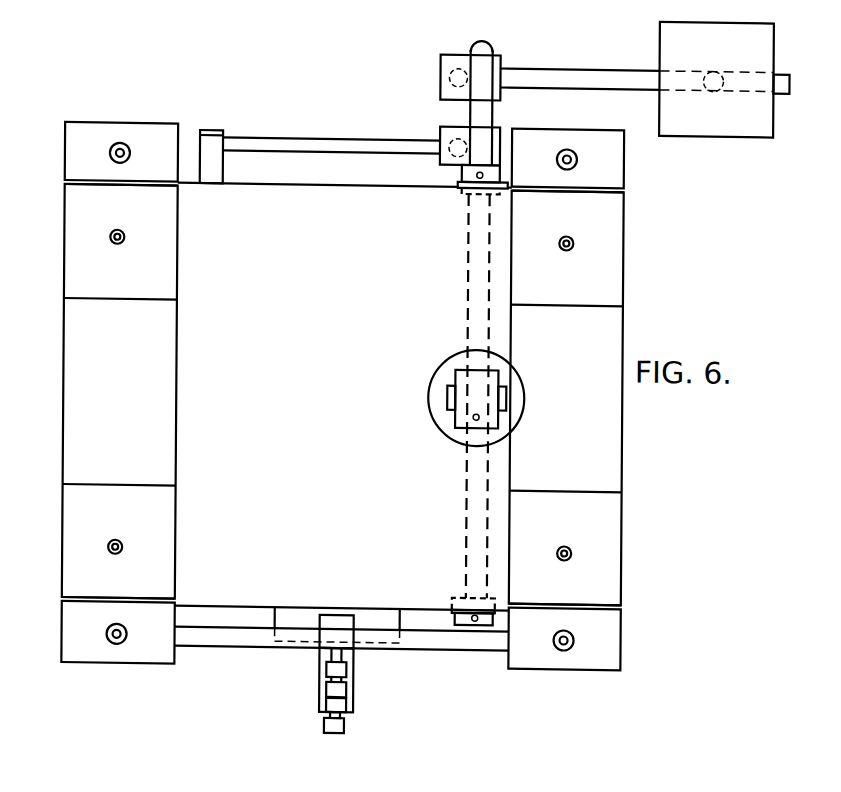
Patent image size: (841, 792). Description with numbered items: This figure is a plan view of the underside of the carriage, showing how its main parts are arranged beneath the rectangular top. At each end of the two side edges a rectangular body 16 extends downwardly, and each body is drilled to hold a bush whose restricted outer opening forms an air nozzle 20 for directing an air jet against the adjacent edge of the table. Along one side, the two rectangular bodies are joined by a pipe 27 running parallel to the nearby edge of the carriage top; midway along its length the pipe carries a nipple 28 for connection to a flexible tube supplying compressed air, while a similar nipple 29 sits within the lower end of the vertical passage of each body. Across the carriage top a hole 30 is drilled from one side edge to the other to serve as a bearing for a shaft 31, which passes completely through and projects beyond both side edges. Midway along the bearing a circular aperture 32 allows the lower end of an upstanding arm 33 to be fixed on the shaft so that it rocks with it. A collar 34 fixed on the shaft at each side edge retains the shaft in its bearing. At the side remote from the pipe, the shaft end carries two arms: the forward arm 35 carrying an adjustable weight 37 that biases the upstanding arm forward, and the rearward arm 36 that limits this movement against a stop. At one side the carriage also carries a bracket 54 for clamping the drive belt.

The rectangular body 16 is at (138, 123).
The air nozzle 20 is at (126, 236).
The pipe 27 is at (212, 643).
The nipple 28 is at (343, 729).
The nipple 29 is at (110, 152).
The hole 30 is at (497, 113).
The shaft 31 is at (485, 40).
The circular aperture 32 is at (432, 373).
The upstanding arm 33 is at (505, 378).
The collar 34 is at (462, 163).
The arm 35 is at (625, 65).
The arm 36 is at (275, 134).
The weight 37 is at (742, 126).
The bracket 54 is at (352, 670).